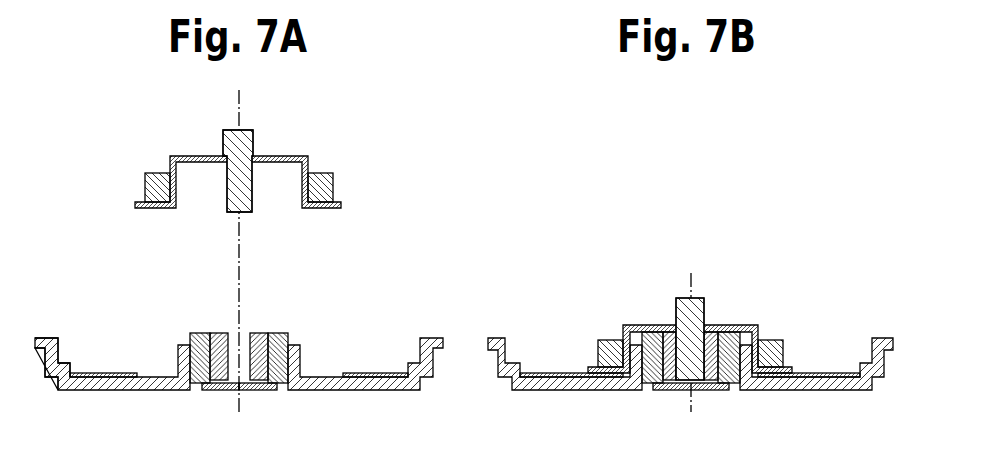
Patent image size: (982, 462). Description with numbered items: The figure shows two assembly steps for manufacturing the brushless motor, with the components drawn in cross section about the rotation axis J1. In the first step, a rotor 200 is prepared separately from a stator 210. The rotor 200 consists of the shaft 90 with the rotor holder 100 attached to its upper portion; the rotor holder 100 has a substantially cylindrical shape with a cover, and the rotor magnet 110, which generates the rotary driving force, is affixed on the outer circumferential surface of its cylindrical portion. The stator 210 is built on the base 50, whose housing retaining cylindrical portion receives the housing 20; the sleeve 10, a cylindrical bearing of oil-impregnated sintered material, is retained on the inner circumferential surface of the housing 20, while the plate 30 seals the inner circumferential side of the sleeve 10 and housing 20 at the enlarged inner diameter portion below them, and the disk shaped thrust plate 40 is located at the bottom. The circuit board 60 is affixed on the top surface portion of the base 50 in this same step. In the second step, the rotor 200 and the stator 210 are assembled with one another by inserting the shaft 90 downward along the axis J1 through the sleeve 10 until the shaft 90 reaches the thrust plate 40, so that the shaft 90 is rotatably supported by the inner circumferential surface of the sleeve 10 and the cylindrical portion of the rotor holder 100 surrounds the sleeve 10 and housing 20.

In FIG. 7A, the sleeve 10 is at (220, 335).
In FIG. 7B, the sleeve 10 is at (710, 340).
In FIG. 7A, the housing 20 is at (192, 335).
In FIG. 7A, the plate 30 is at (225, 390).
In FIG. 7A, the thrust plate 40 is at (250, 390).
In FIG. 7A, the base 50 is at (47, 342).
In FIG. 7A, the circuit board 60 is at (107, 373).
In FIG. 7A, the shaft 90 is at (247, 200).
In FIG. 7B, the shaft 90 is at (687, 297).
In FIG. 7A, the rotor holder 100 is at (278, 153).
In FIG. 7A, the rotor magnet 110 is at (330, 188).
In FIG. 7A, the rotor 200 is at (253, 154).
In FIG. 7B, the rotor 200 is at (659, 310).
In FIG. 7A, the stator 210 is at (238, 341).
In FIG. 7B, the stator 210 is at (690, 269).
In FIG. 7A, the center axis J1 is at (240, 117).
In FIG. 7B, the center axis J1 is at (692, 273).